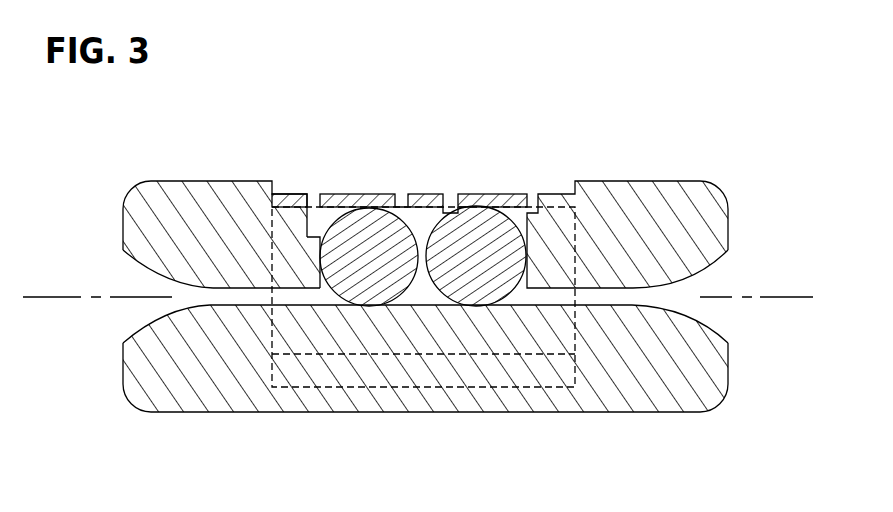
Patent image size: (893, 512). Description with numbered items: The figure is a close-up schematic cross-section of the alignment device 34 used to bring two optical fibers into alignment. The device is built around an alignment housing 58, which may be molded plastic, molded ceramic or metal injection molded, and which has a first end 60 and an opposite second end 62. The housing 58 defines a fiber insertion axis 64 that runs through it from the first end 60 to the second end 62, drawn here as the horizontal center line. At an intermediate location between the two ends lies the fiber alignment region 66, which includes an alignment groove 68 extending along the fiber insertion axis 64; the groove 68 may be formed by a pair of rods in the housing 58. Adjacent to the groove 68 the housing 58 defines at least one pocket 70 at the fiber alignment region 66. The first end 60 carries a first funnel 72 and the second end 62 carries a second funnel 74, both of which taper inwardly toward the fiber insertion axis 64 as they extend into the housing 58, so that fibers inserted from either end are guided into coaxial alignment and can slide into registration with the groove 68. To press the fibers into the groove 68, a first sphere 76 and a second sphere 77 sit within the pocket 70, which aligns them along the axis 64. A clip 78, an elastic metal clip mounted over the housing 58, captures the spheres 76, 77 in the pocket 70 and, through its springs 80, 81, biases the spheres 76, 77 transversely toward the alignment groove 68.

The alignment device 34 is at (540, 91).
The alignment housing 58 is at (643, 194).
The first end 60 is at (122, 215).
The second end 62 is at (728, 210).
The fiber insertion axis 64 is at (83, 298).
The fiber alignment region 66 is at (420, 181).
The alignment groove 68 is at (513, 303).
The pocket 70 is at (324, 280).
The first funnel 72 is at (138, 259).
The second funnel 74 is at (707, 265).
The first sphere 76 is at (378, 212).
The second sphere 77 is at (473, 210).
The clip 78 is at (288, 194).
The spring 80 is at (335, 194).
The spring 81 is at (514, 194).